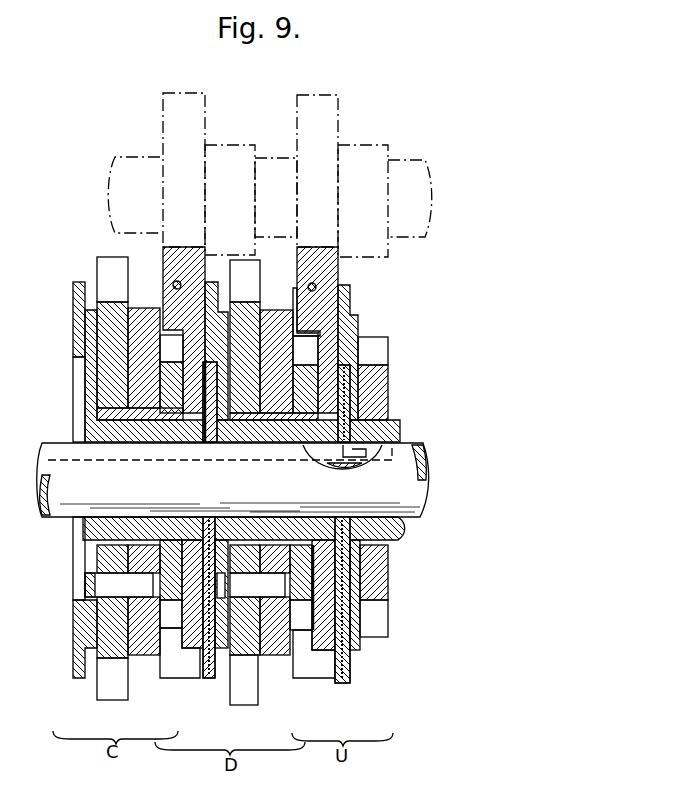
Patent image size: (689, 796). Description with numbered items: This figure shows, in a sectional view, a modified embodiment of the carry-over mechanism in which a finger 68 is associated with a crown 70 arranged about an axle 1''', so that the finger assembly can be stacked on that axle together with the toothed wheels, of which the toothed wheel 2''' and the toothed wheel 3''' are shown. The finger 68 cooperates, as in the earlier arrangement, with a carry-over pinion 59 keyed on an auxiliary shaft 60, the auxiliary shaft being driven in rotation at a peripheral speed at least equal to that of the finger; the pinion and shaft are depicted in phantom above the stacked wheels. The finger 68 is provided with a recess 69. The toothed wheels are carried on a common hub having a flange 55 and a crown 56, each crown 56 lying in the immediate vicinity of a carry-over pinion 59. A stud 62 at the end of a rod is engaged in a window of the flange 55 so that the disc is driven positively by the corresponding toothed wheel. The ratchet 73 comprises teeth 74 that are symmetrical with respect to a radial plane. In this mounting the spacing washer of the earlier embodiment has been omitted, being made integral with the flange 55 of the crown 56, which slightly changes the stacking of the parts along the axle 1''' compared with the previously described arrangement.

The carry-over pinion 59 is at (338, 104).
The auxiliary shaft 60 is at (418, 238).
The finger 68 is at (297, 258).
The recess 69 is at (305, 320).
The crown 70 is at (207, 520).
The ratchet 73 is at (305, 530).
The axle 1''' is at (233, 480).
The stud 62 is at (85, 582).
The toothed wheel 3''' is at (99, 682).
The crown 56 is at (175, 650).
The flange 55 is at (256, 650).
The teeth 74 is at (307, 634).
The toothed wheel 2''' is at (260, 685).